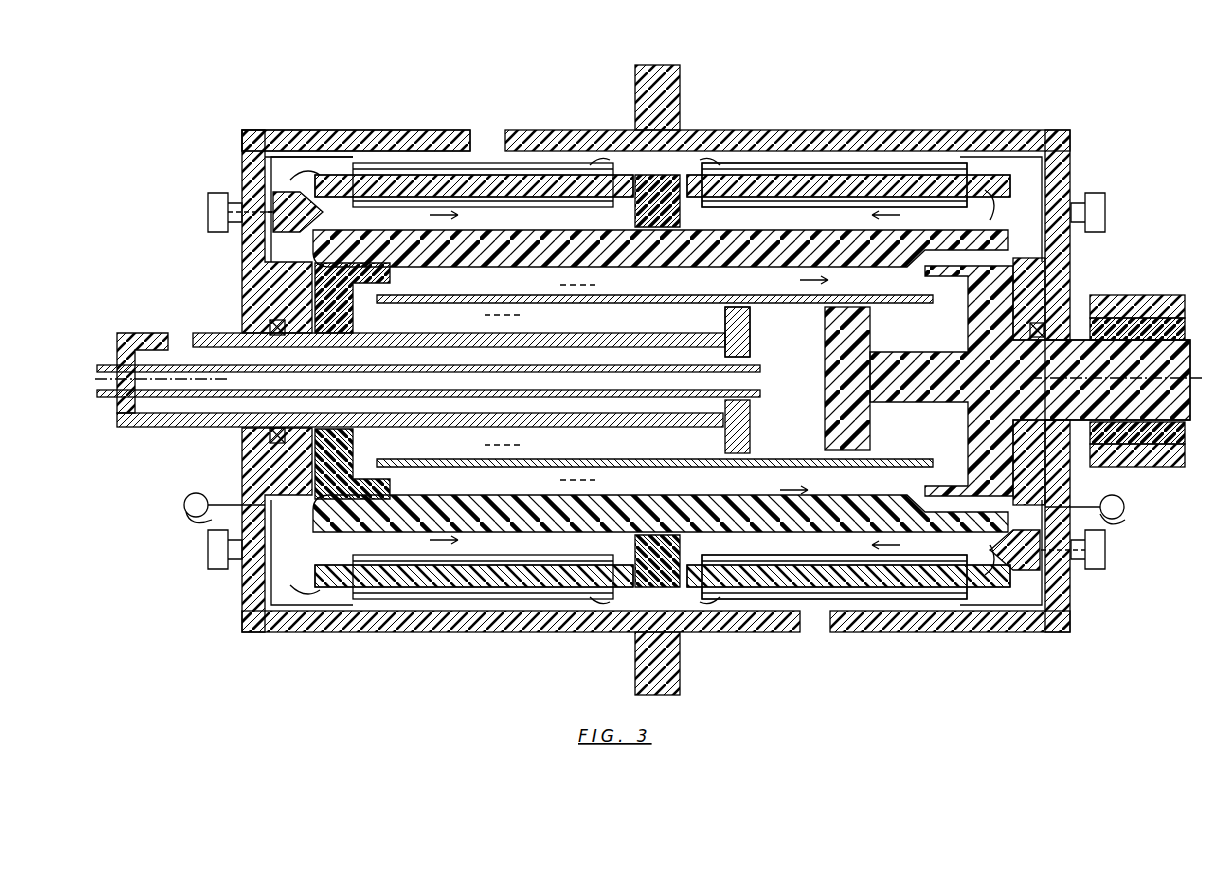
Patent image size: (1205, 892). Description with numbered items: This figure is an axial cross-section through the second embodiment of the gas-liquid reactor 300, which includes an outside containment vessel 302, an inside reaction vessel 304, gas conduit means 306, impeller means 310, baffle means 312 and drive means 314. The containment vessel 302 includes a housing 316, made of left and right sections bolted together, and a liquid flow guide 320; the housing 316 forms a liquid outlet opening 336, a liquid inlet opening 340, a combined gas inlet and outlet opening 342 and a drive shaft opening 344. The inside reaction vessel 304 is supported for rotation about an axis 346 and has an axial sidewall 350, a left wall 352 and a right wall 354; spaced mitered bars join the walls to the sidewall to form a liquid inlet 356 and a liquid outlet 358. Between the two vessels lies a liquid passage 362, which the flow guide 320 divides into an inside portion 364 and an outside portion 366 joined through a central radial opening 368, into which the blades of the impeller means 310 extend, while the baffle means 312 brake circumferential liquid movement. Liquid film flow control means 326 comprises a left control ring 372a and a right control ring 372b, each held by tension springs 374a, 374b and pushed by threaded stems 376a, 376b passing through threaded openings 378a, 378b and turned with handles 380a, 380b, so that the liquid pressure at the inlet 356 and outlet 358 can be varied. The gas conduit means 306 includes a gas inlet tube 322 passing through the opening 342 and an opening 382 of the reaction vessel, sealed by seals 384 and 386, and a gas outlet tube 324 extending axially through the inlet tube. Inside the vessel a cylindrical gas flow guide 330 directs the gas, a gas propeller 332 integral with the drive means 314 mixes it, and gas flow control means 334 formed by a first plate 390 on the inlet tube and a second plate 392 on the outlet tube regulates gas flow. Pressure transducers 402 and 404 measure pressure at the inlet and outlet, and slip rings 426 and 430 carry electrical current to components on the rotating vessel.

The gas-liquid reactor 300 is at (1048, 92).
The outside containment vessel 302 is at (388, 128).
The inside reaction vessel 304 is at (905, 568).
The gas conduit means 306 is at (140, 435).
The impeller means 310 is at (640, 535).
The baffle means 312 is at (790, 200).
The drive means 314 is at (1037, 381).
The housing 316 is at (795, 150).
The liquid flow guide 320 is at (915, 198).
The gas inlet tube 322 is at (158, 325).
The gas outlet tube 324 is at (440, 372).
The liquid film flow control means 326 is at (1076, 178).
The gas flow guide 330 is at (598, 470).
The gas propeller 332 is at (858, 336).
The gas flow control means 334 is at (760, 420).
The liquid outlet opening 336 is at (478, 150).
The liquid inlet opening 340 is at (832, 622).
The combined gas inlet and outlet opening 342 is at (248, 432).
The drive shaft opening 344 is at (1048, 280).
The axis 346 is at (1165, 380).
The axial sidewall 350 is at (660, 248).
The left wall 352 is at (320, 470).
The right wall 354 is at (960, 400).
The liquid inlet 356 is at (315, 290).
The liquid outlet 358 is at (985, 240).
The liquid passage 362 is at (525, 175).
The inside portion of liquid passage 364 is at (560, 381).
The outside portion of liquid passage 366 is at (865, 175).
The central radial opening 368 is at (686, 195).
The left control ring 372a is at (318, 212).
The right control ring 372b is at (998, 545).
The tension springs 374a is at (268, 180).
The tension springs 374b is at (1040, 600).
The stems 376a is at (232, 235).
The threaded stems 376b is at (1075, 560).
The threaded openings 378a is at (262, 188).
The threaded housing openings 378b is at (1060, 595).
The handles 380a is at (212, 220).
The handles 380b is at (1092, 558).
The opening of inside reaction vessel 382 is at (365, 322).
The seal 384 is at (268, 328).
The seal 386 is at (650, 450).
The first plate 390 is at (724, 318).
The second plate 392 is at (750, 325).
The pressure transducer 402 is at (182, 512).
The pressure transducer 404 is at (1125, 515).
The slip ring 426 is at (1128, 270).
The slip ring 430 is at (1188, 270).